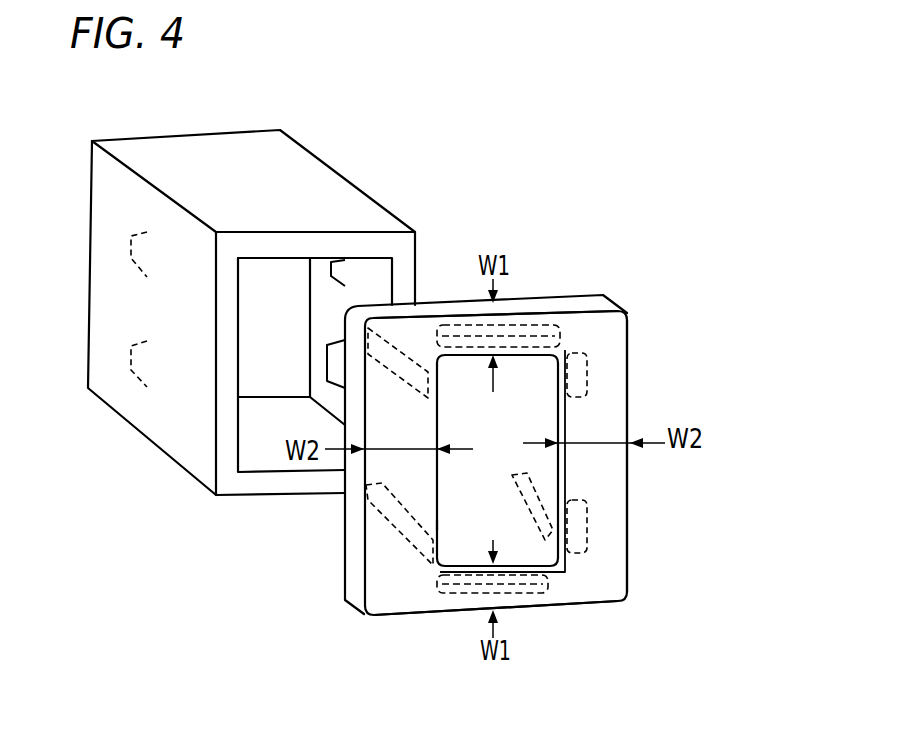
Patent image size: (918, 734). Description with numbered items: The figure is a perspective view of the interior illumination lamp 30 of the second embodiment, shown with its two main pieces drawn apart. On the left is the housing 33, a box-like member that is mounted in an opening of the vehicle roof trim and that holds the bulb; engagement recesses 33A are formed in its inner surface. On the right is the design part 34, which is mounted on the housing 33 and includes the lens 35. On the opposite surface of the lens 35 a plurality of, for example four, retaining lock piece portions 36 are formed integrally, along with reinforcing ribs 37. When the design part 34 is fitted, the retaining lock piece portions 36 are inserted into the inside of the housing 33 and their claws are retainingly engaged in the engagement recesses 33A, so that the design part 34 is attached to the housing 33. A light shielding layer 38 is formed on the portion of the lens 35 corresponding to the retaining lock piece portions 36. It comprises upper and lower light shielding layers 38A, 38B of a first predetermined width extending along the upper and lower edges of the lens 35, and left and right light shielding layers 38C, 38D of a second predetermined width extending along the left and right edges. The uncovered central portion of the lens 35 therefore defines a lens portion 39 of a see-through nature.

The interior illumination lamp 30 is at (549, 149).
The housing 33 is at (333, 168).
The engagement recesses 33A is at (324, 342).
The design part 34 is at (613, 284).
The lens 35 is at (467, 548).
The retaining lock piece portions 36 is at (590, 355).
The reinforcing ribs 37 is at (470, 325).
The light shielding layer 38 is at (634, 559).
The upper light shielding layer 38A is at (502, 322).
The lower light shielding layer 38B is at (580, 590).
The left light shielding layer 38C is at (420, 483).
The right light shielding layer 38D is at (613, 478).
The lens portion 39 is at (447, 525).